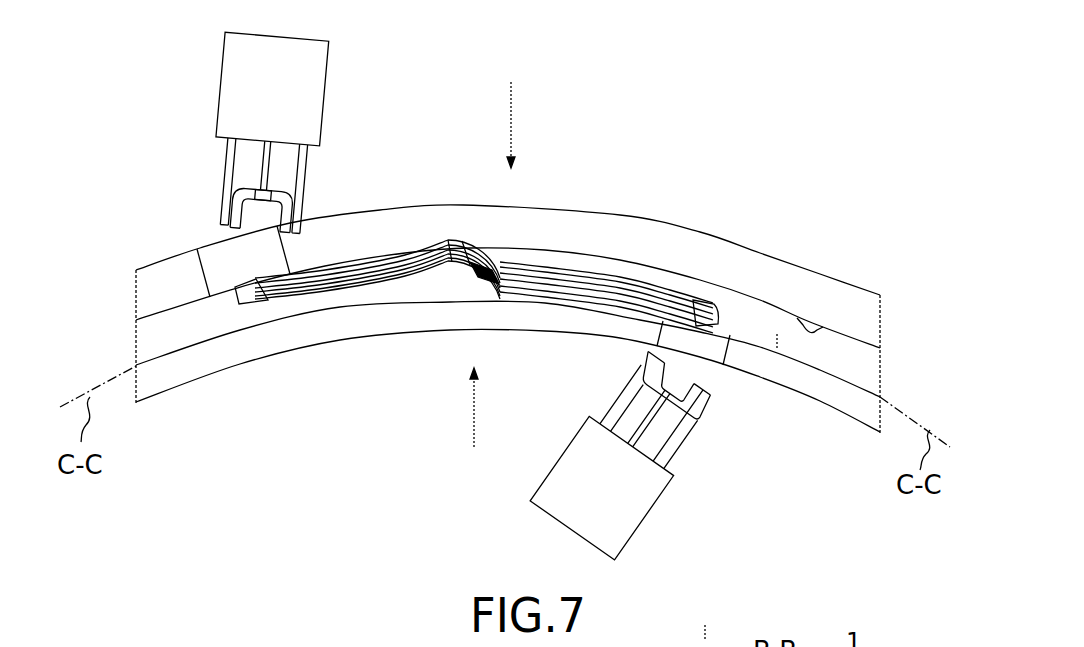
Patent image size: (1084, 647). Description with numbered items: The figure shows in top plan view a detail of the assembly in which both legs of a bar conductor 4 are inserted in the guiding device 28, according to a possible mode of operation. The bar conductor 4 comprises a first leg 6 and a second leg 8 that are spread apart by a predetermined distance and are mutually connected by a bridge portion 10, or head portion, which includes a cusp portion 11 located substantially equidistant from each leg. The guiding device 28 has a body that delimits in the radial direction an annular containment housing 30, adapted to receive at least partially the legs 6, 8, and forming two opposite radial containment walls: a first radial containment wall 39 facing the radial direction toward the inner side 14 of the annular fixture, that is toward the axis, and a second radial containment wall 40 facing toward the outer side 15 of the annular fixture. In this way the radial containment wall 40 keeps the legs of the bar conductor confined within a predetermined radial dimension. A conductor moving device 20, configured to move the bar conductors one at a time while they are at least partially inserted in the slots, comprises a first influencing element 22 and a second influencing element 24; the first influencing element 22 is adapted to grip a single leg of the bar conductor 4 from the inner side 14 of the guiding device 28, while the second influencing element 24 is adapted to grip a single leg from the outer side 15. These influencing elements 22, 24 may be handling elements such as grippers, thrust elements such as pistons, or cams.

The bar conductor 4 is at (504, 302).
The first leg 6 is at (266, 296).
The second leg 8 is at (713, 298).
The bridge portion 10 is at (380, 270).
The cusp portion 11 is at (470, 278).
The inner side 14 is at (484, 430).
The outer side 15 is at (505, 105).
The conductor moving device 20 is at (297, 97).
The first influencing element 22 is at (680, 423).
The second influencing element 24 is at (240, 180).
The guiding device 28 is at (863, 320).
The annular containment housing 30 is at (843, 357).
The first radial containment wall 39 is at (823, 330).
The radial containment wall 40 is at (777, 348).